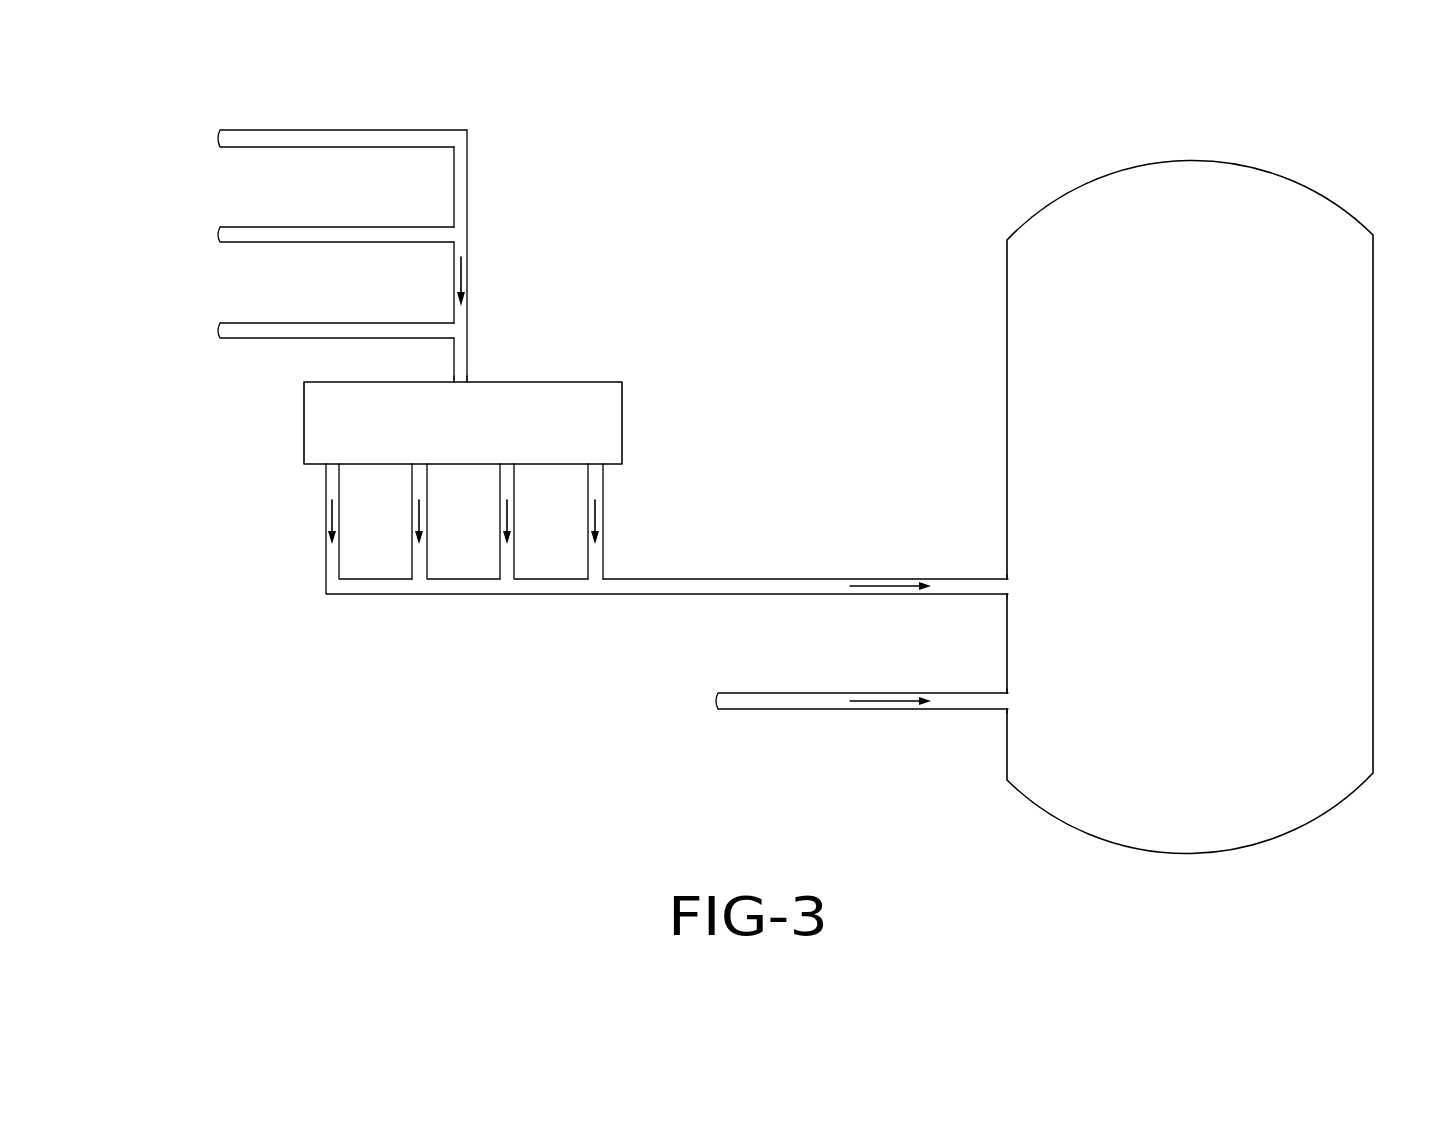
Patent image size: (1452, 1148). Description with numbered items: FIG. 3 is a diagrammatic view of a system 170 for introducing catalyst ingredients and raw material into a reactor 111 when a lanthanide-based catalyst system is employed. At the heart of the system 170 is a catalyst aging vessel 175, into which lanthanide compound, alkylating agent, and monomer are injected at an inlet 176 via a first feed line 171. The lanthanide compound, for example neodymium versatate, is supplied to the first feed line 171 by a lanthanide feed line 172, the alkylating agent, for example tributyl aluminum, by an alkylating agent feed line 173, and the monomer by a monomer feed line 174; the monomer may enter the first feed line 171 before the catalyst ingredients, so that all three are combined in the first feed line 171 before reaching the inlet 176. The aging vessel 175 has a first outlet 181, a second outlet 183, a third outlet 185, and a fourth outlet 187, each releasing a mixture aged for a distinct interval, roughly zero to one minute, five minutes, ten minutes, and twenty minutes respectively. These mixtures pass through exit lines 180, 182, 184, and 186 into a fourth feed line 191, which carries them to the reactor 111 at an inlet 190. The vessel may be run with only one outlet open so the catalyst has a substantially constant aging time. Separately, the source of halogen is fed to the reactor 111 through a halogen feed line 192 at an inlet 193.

The reactor 111 is at (1073, 192).
The system 170 is at (721, 193).
The first feed line 171 is at (467, 318).
The lanthanide feed line 172 is at (335, 130).
The alkylating agent feed line 173 is at (335, 227).
The monomer feed line 174 is at (335, 323).
The catalyst aging vessel 175 is at (304, 410).
The inlet 176 is at (462, 380).
The exit line 180 is at (323, 560).
The first outlet 181 is at (330, 467).
The exit line 182 is at (412, 560).
The second outlet 183 is at (418, 467).
The exit line 184 is at (500, 560).
The third outlet 185 is at (507, 467).
The exit line 186 is at (588, 560).
The fourth outlet 187 is at (595, 467).
The inlet 190 is at (1007, 585).
The fourth feed line 191 is at (852, 577).
The halogen feed line 192 is at (852, 693).
The inlet 193 is at (1007, 697).